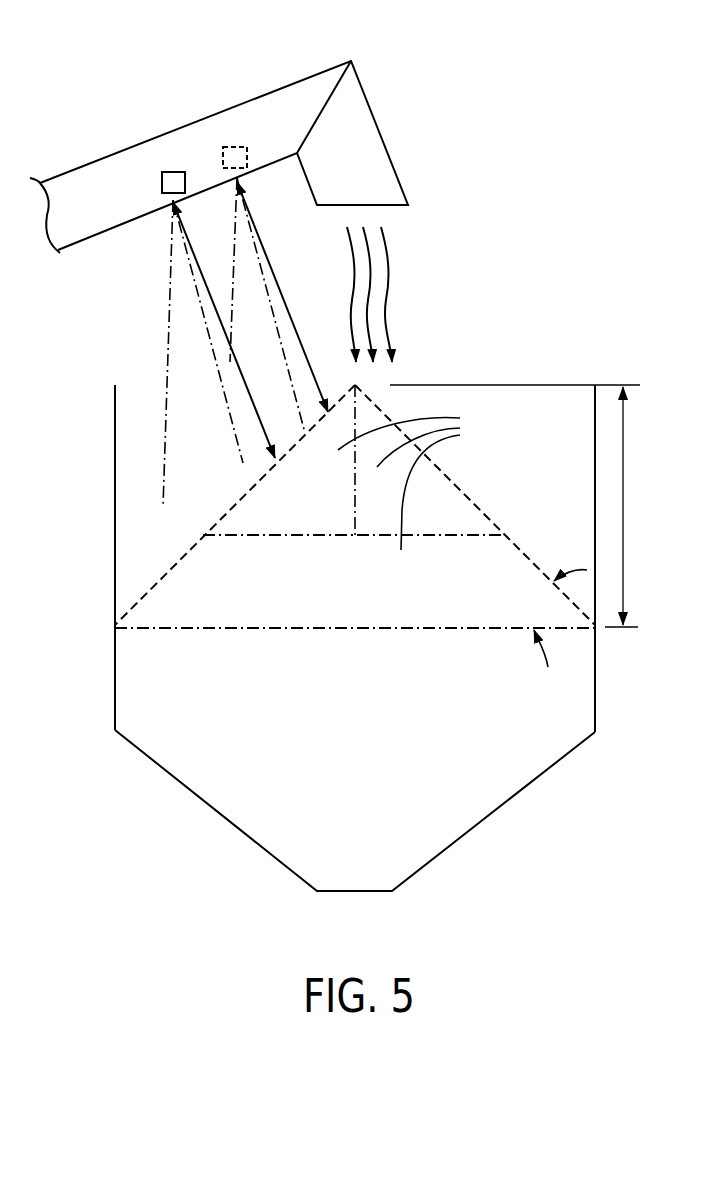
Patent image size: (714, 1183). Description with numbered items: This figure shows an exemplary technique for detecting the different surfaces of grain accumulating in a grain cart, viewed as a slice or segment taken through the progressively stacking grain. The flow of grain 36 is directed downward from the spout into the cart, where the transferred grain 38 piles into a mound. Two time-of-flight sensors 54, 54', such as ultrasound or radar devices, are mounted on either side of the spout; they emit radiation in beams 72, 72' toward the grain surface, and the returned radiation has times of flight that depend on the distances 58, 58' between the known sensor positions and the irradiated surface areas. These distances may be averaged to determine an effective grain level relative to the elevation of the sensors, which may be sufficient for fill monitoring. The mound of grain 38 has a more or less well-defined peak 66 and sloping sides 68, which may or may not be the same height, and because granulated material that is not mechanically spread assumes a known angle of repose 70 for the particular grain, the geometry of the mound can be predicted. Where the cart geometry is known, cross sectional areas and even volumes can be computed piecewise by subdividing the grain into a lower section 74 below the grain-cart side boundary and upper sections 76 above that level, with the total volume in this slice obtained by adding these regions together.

The transferred grain 38 is at (123, 167).
The sensor 54 is at (155, 120).
The sensor 54' is at (221, 94).
The distance 58 is at (196, 330).
The distance 58' is at (282, 297).
The beam 72 is at (152, 353).
The beam 72' is at (284, 305).
The flow of grain 36 is at (388, 286).
The sloping sides 68 is at (447, 477).
The lower section 74 is at (240, 803).
The upper sections 76 is at (413, 480).
The angle of repose 70 is at (542, 607).
The peak 66 is at (515, 506).